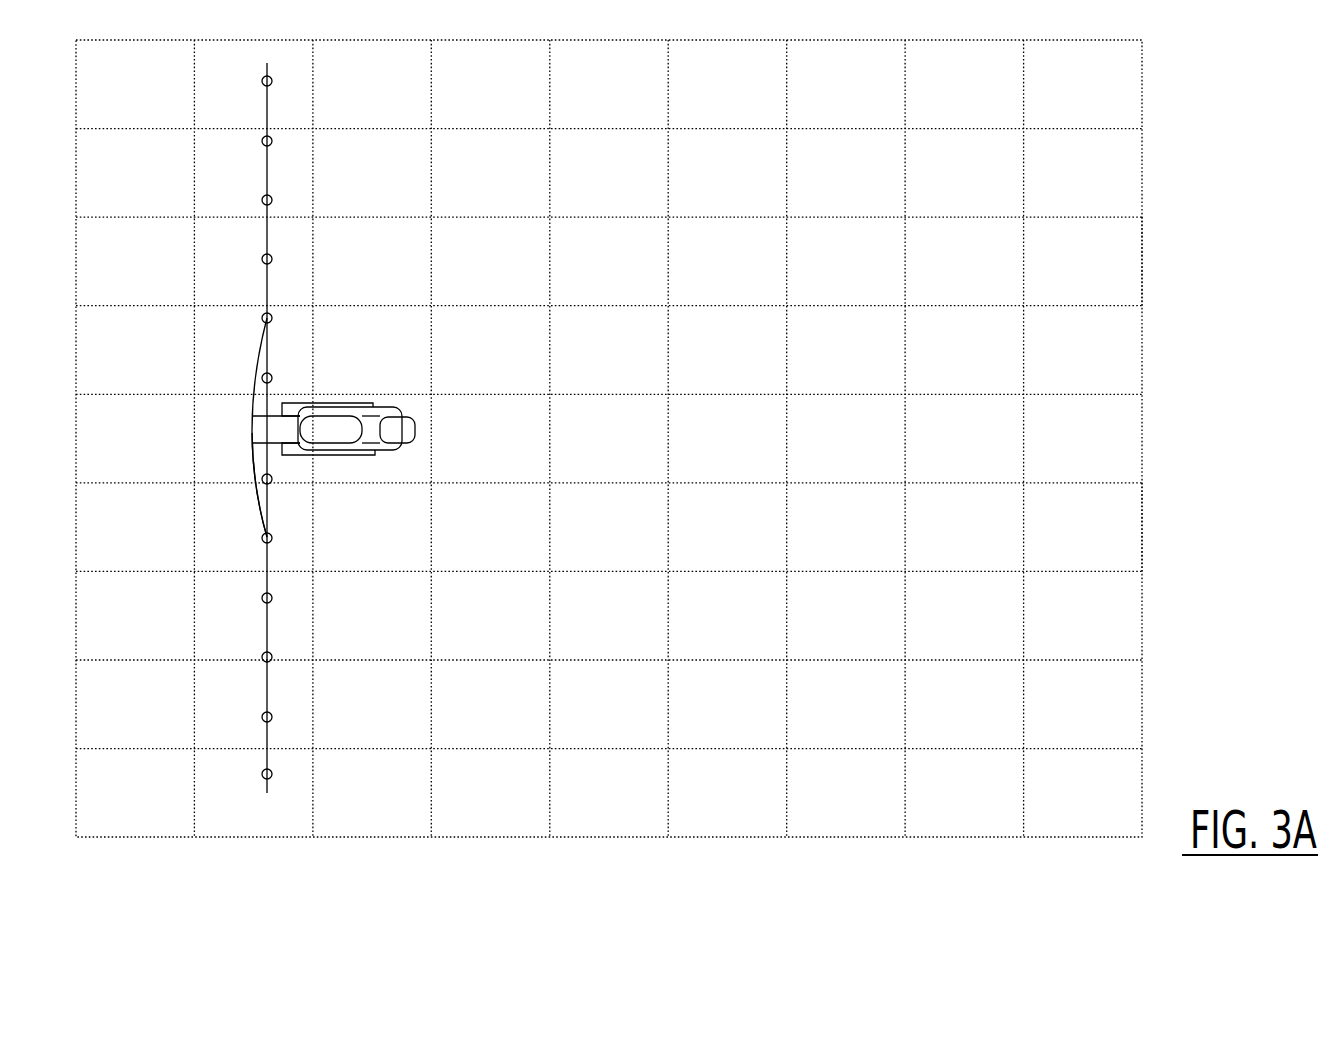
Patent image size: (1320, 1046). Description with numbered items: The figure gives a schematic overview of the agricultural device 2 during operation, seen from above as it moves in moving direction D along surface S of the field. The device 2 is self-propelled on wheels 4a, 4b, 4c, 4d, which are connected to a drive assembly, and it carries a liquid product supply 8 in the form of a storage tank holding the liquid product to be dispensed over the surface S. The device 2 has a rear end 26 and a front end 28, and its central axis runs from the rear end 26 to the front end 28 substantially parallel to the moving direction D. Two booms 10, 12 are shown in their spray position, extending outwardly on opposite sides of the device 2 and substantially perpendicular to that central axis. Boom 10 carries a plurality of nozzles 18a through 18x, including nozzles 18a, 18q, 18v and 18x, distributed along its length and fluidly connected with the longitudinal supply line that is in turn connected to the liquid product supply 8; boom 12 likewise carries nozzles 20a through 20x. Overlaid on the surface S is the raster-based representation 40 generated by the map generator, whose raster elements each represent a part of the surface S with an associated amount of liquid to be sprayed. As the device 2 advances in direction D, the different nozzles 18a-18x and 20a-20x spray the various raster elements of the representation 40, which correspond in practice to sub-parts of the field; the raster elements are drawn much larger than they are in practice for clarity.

The agricultural device 2 is at (478, 198).
The wheel 4a is at (371, 451).
The wheel 4b is at (360, 407).
The wheel 4c is at (291, 456).
The wheel 4d is at (285, 403).
The liquid product supply 8 is at (337, 434).
The boom 10 is at (242, 173).
The boom 12 is at (240, 723).
The nozzle 18a is at (245, 377).
The nozzle 18q is at (262, 258).
The nozzle 18v is at (263, 135).
The nozzle 18x is at (281, 84).
The nozzle 20a is at (247, 498).
The nozzle 20x is at (262, 773).
The rear end 26 is at (233, 438).
The front end 28 is at (465, 422).
The raster-based representation 40 is at (1149, 509).
The surface S is at (1182, 255).
The moving direction D is at (522, 460).